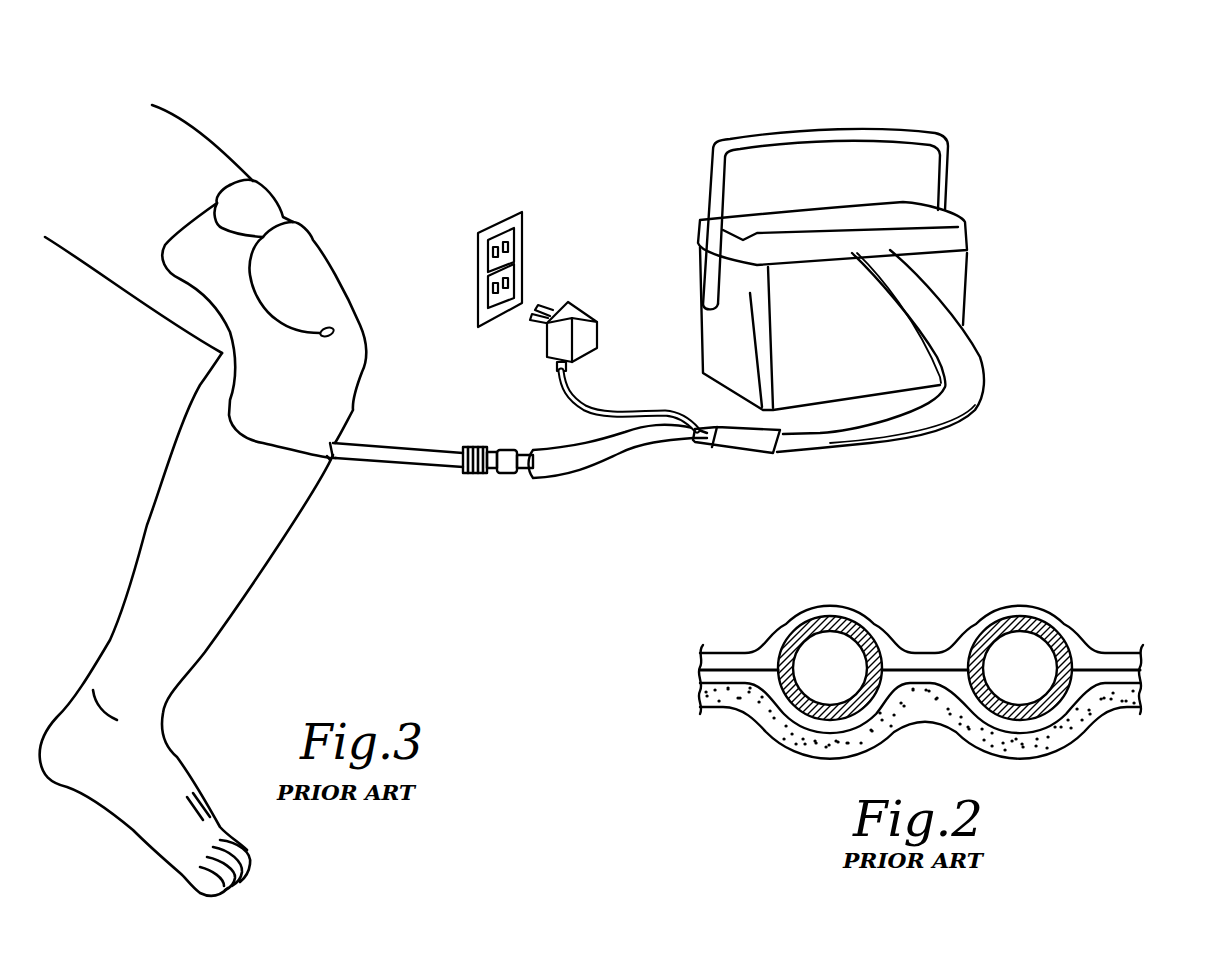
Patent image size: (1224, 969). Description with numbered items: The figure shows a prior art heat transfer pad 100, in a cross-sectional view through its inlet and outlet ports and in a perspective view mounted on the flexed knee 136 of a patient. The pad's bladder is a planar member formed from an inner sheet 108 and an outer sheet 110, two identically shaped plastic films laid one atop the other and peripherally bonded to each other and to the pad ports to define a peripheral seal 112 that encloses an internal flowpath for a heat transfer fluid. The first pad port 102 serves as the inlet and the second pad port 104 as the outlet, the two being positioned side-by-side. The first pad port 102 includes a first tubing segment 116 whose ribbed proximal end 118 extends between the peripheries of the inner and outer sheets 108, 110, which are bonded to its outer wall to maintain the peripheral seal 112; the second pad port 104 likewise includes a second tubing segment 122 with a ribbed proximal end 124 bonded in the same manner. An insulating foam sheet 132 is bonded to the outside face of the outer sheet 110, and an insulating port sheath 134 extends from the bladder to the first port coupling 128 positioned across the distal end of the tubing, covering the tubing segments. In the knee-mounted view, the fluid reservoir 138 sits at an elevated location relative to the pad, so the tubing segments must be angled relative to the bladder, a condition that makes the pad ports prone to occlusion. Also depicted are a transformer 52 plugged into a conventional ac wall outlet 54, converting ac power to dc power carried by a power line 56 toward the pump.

In FIG. 3, the heat transfer pad 100 is at (323, 260).
In FIG. 3, the flexed knee 136 is at (217, 353).
In FIG. 3, the insulating foam sheet 132 is at (337, 440).
In FIG. 2, the insulating foam sheet 132 is at (1007, 747).
In FIG. 3, the inner sheet 108 is at (340, 463).
In FIG. 2, the inner sheet 108 is at (840, 612).
In FIG. 3, the proximal end 118 is at (333, 462).
In FIG. 2, the proximal end 118 is at (1053, 630).
In FIG. 3, the insulating port sheath 134 is at (433, 450).
In FIG. 3, the first port coupling 128 is at (490, 472).
In FIG. 3, the ac wall outlet 54 is at (520, 222).
In FIG. 3, the transformer 52 is at (580, 316).
In FIG. 3, the power line 56 is at (589, 402).
In FIG. 3, the fluid reservoir 138 is at (770, 222).
In FIG. 2, the first pad port 102 is at (1015, 618).
In FIG. 2, the second pad port 104 is at (860, 627).
In FIG. 2, the outer sheet 110 is at (795, 718).
In FIG. 2, the peripheral seal 112 is at (1113, 653).
In FIG. 2, the first tubing segment 116 is at (1033, 620).
In FIG. 2, the second tubing segment 122 is at (814, 617).
In FIG. 2, the proximal end 124 is at (803, 627).